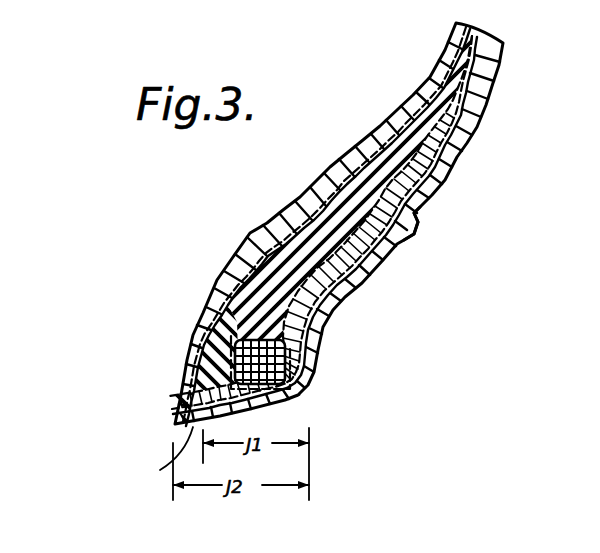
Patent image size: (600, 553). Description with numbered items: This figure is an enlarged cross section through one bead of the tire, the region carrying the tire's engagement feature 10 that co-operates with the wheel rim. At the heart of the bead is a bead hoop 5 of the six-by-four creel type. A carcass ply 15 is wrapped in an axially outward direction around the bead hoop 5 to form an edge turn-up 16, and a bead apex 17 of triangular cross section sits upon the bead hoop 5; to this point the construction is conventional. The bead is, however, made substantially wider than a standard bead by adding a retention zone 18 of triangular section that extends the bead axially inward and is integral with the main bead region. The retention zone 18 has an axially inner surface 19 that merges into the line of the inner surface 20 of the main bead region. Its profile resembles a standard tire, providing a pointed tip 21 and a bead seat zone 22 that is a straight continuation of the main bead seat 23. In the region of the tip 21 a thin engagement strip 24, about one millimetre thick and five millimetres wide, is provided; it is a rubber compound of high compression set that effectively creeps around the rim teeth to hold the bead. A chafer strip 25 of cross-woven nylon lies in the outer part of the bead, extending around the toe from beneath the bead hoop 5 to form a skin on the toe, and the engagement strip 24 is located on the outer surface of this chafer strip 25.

The engagement feature 10 is at (158, 381).
The carcass ply 15 is at (376, 134).
The edge turn-up 16 is at (412, 153).
The bead apex 17 is at (413, 229).
The retention zone 18 is at (197, 363).
The axially inner surface 19 is at (200, 330).
The inner surface 20 is at (248, 234).
The pointed tip 21 is at (176, 425).
The bead seat zone 22 is at (160, 470).
The main bead seat 23 is at (247, 400).
The engagement strip 24 is at (185, 424).
The chafer strip 25 is at (230, 278).
The bead hoop 5 is at (289, 363).